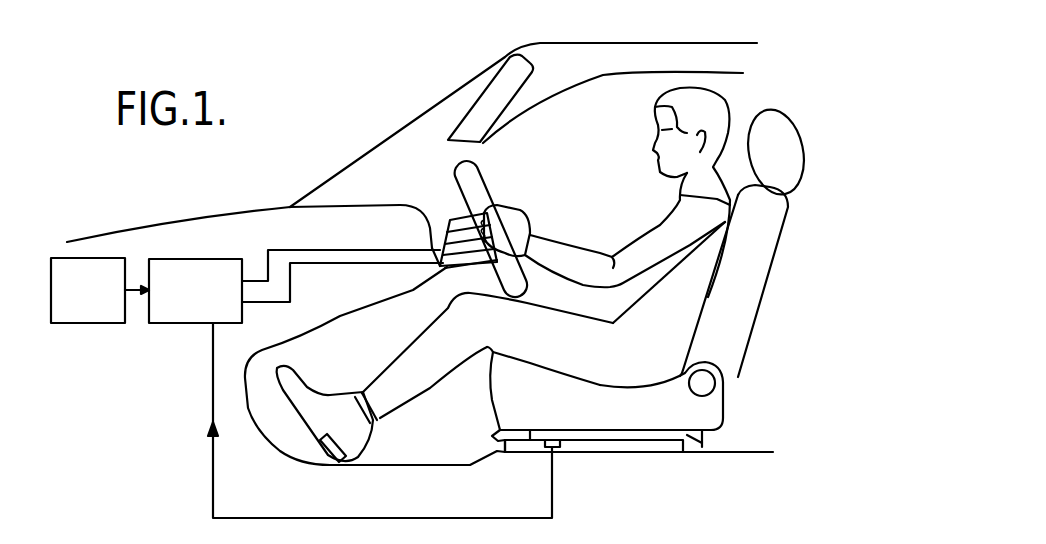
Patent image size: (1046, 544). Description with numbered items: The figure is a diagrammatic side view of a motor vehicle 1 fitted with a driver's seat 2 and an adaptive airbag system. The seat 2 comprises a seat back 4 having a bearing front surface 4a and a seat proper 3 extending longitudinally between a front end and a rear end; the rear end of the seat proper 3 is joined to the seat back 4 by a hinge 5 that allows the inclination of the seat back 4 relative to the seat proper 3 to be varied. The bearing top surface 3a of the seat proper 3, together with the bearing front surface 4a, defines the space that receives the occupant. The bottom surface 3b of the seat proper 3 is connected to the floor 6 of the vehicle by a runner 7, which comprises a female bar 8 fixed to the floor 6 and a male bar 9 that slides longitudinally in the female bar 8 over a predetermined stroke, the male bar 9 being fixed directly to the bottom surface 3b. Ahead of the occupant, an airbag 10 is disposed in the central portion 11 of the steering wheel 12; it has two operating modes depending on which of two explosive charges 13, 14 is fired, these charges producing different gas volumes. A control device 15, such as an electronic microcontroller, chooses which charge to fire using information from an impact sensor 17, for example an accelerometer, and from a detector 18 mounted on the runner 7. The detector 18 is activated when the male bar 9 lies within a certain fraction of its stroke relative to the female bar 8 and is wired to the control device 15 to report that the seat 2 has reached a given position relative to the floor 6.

The motor vehicle 1 is at (333, 155).
The seat 2 is at (757, 393).
The seat proper 3 is at (715, 415).
The bearing top surface 3a is at (547, 372).
The bottom surface 3b is at (494, 437).
The seat back 4 is at (745, 282).
The bearing front surface 4a is at (686, 357).
The hinge 5 is at (708, 382).
The floor 6 is at (393, 467).
The runner 7 is at (498, 446).
The female bar 8 is at (667, 446).
The male bar 9 is at (722, 450).
The airbag 10 is at (467, 233).
The central portion 11 is at (513, 223).
The steering wheel 12 is at (466, 180).
The explosive charge 13 is at (457, 230).
The explosive charge 14 is at (452, 263).
The control device 15 is at (168, 325).
The impact sensor 17 is at (75, 325).
The detector 18 is at (560, 455).